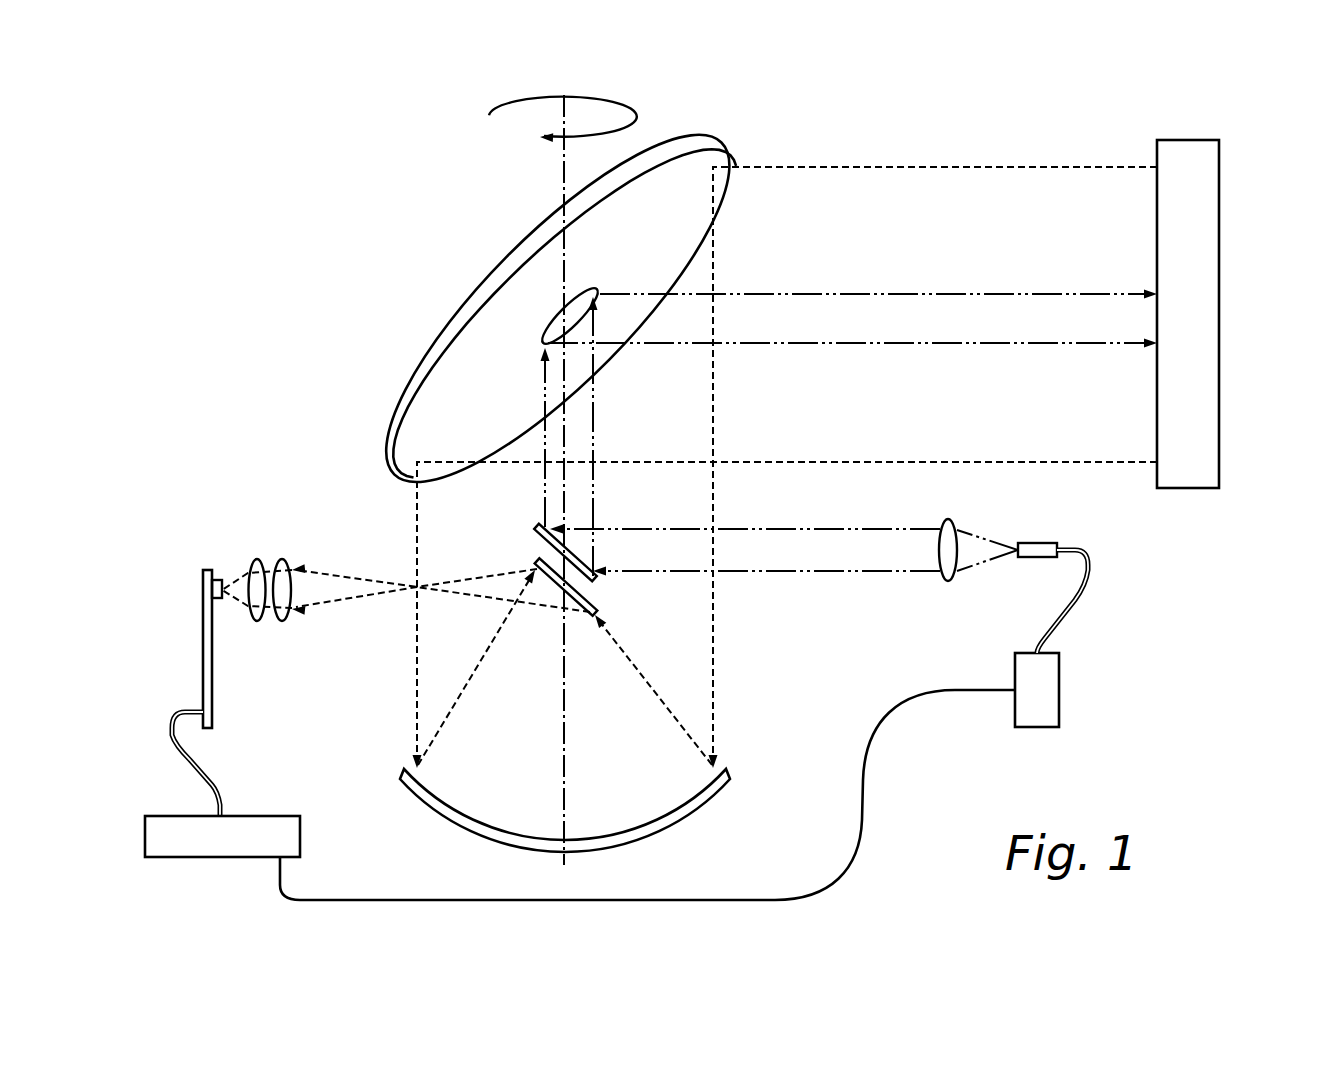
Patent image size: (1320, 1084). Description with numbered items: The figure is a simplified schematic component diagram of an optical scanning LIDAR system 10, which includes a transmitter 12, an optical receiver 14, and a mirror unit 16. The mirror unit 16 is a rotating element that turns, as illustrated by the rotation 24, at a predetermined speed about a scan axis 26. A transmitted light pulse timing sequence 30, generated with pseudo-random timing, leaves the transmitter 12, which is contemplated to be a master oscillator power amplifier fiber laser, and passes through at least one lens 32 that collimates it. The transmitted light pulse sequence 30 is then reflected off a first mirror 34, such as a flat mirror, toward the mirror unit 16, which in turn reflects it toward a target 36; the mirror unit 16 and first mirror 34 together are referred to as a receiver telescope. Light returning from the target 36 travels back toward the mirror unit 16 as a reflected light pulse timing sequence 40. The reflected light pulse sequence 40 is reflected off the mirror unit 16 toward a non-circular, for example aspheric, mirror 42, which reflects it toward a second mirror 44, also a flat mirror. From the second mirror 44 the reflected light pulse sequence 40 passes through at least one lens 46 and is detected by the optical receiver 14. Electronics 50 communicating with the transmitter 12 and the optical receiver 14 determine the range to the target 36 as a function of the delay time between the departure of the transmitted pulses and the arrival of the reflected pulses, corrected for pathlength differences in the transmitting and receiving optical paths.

The optical scanning LIDAR system 10 is at (185, 262).
The transmitter 12 is at (1060, 680).
The optical receiver 14 is at (203, 652).
The mirror unit 16 is at (392, 388).
The rotation of the mirror unit 24 is at (627, 106).
The scan axis 26 is at (567, 761).
The transmitted light pulse timing sequence 30 is at (948, 294).
The lens 32 is at (948, 581).
The first mirror 34 is at (538, 544).
The target 36 is at (1219, 340).
The reflected light pulse timing sequence 40 is at (948, 167).
The non-circular mirror 42 is at (470, 831).
The second mirror 44 is at (595, 603).
The lens 46 is at (232, 630).
The electronics 50 is at (214, 857).